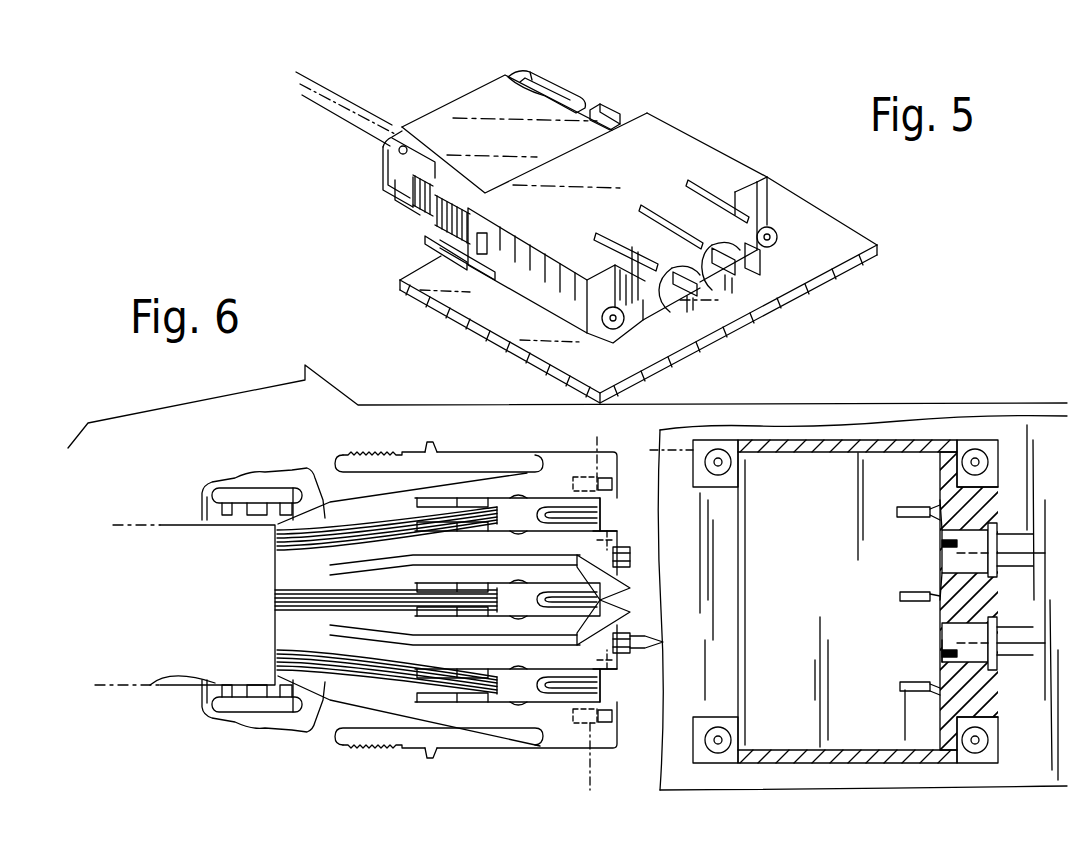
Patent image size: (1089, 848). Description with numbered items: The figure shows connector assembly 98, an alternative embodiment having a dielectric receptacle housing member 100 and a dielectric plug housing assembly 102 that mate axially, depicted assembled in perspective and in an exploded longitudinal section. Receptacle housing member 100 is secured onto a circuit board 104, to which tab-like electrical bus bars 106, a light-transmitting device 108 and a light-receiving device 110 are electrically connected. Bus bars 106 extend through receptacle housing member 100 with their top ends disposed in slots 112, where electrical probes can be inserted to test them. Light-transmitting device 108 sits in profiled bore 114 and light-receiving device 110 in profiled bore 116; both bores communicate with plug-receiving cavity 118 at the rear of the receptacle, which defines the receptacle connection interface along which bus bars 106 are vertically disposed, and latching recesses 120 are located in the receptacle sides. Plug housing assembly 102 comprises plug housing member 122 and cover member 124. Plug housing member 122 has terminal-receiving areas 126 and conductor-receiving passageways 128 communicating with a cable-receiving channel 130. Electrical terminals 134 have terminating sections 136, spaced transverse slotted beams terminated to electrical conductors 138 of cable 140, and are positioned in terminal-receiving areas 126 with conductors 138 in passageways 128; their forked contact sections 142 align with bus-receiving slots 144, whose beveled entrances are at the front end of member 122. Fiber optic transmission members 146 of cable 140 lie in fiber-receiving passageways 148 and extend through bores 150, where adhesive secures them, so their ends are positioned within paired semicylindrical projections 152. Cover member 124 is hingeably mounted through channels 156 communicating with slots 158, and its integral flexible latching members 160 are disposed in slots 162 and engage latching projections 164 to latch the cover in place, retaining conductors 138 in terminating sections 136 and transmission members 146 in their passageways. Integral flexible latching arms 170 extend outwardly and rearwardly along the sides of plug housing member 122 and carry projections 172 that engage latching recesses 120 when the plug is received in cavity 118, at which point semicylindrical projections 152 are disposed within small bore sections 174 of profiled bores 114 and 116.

In FIG. 5, the connector assembly 98 is at (704, 88).
In FIG. 6, the connector assembly 98 is at (632, 433).
In FIG. 5, the receptacle housing member 100 is at (735, 160).
In FIG. 6, the receptacle housing member 100 is at (957, 757).
In FIG. 5, the plug housing assembly 102 is at (470, 110).
In FIG. 6, the plug housing assembly 102 is at (530, 750).
In FIG. 5, the circuit board 104 is at (862, 244).
In FIG. 6, the circuit board 104 is at (805, 775).
In FIG. 5, the electrical bus bars 106 is at (697, 193).
In FIG. 6, the electrical bus bars 106 is at (897, 512).
In FIG. 5, the light-transmitting device 108 is at (690, 280).
In FIG. 6, the light-transmitting device 108 is at (957, 550).
In FIG. 5, the light-receiving device 110 is at (734, 282).
In FIG. 6, the light-receiving device 110 is at (957, 632).
In FIG. 5, the slots 112 is at (640, 224).
In FIG. 5, the profiled bore 114 is at (657, 283).
In FIG. 6, the profiled bore 114 is at (955, 528).
In FIG. 5, the profiled bore 116 is at (756, 255).
In FIG. 6, the profiled bore 116 is at (945, 650).
In FIG. 6, the plug-receiving cavity 118 is at (871, 514).
In FIG. 5, the latching recesses 120 is at (483, 245).
In FIG. 6, the latching recesses 120 is at (765, 455).
In FIG. 5, the plug housing member 122 is at (395, 182).
In FIG. 6, the plug housing member 122 is at (327, 517).
In FIG. 5, the cover member 124 is at (533, 153).
In FIG. 6, the terminal-receiving areas 126 is at (520, 500).
In FIG. 6, the conductor-receiving passageways 128 is at (273, 533).
In FIG. 6, the cable-receiving channel 130 is at (172, 681).
In FIG. 6, the electrical terminals 134 is at (493, 700).
In FIG. 6, the terminating sections 136 is at (467, 615).
In FIG. 6, the electrical conductors 138 is at (273, 602).
In FIG. 5, the cable 140 is at (363, 97).
In FIG. 6, the cable 140 is at (155, 533).
In FIG. 6, the forked contact sections 142 is at (557, 703).
In FIG. 6, the bus-receiving slots 144 is at (607, 512).
In FIG. 6, the fiber optic transmission members 146 is at (605, 582).
In FIG. 6, the fiber-receiving passageways 148 is at (357, 560).
In FIG. 6, the bores 150 is at (622, 528).
In FIG. 6, the semicylindrical projections 152 is at (652, 641).
In FIG. 6, the channels 156 is at (596, 609).
In FIG. 6, the slots 158 is at (612, 488).
In FIG. 5, the flexible latching members 160 is at (395, 160).
In FIG. 5, the slots 162 is at (552, 78).
In FIG. 6, the slots 162 is at (223, 493).
In FIG. 5, the latching projections 164 is at (396, 170).
In FIG. 6, the latching projections 164 is at (258, 503).
In FIG. 5, the latching arms 170 is at (618, 117).
In FIG. 6, the latching arms 170 is at (355, 453).
In FIG. 5, the projections 172 is at (480, 255).
In FIG. 6, the projections 172 is at (435, 445).
In FIG. 6, the small bore sections 174 is at (940, 560).